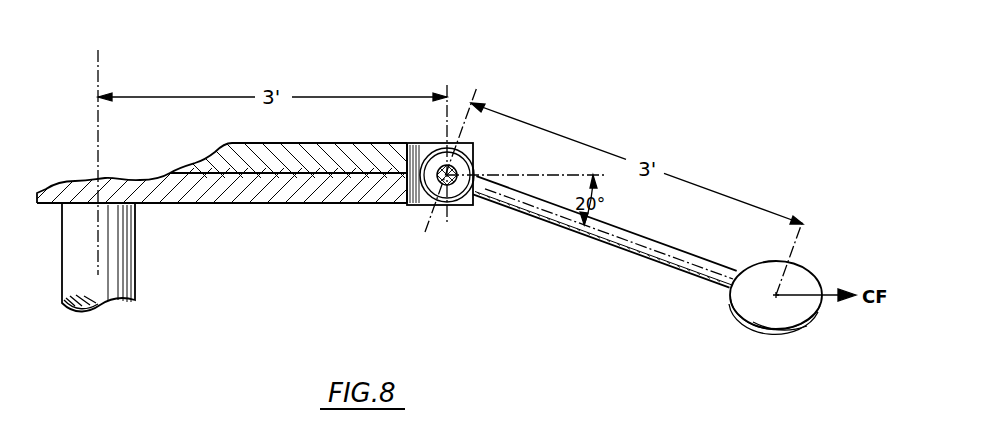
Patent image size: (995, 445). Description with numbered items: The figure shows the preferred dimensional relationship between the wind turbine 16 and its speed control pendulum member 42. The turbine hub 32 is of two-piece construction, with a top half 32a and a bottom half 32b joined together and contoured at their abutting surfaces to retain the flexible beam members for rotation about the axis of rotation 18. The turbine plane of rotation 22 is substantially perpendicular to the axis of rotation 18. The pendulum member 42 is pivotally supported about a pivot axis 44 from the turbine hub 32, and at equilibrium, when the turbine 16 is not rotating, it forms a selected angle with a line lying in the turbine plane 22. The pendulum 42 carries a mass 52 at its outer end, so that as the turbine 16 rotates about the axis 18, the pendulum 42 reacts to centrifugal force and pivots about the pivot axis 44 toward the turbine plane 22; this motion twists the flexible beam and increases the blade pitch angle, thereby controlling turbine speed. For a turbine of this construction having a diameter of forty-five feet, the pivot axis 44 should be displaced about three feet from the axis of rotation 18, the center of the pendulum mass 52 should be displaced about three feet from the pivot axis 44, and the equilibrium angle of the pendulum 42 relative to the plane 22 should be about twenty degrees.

The wind turbine 16 is at (542, 83).
The axis of rotation 18 is at (98, 78).
The turbine plane of rotation 22 is at (568, 176).
The turbine hub 32 is at (228, 180).
The top half 32a is at (218, 155).
The bottom half 32b is at (199, 198).
The pendulum member 42 is at (658, 249).
The pivot axis 44 is at (466, 207).
The mass 52 is at (757, 322).